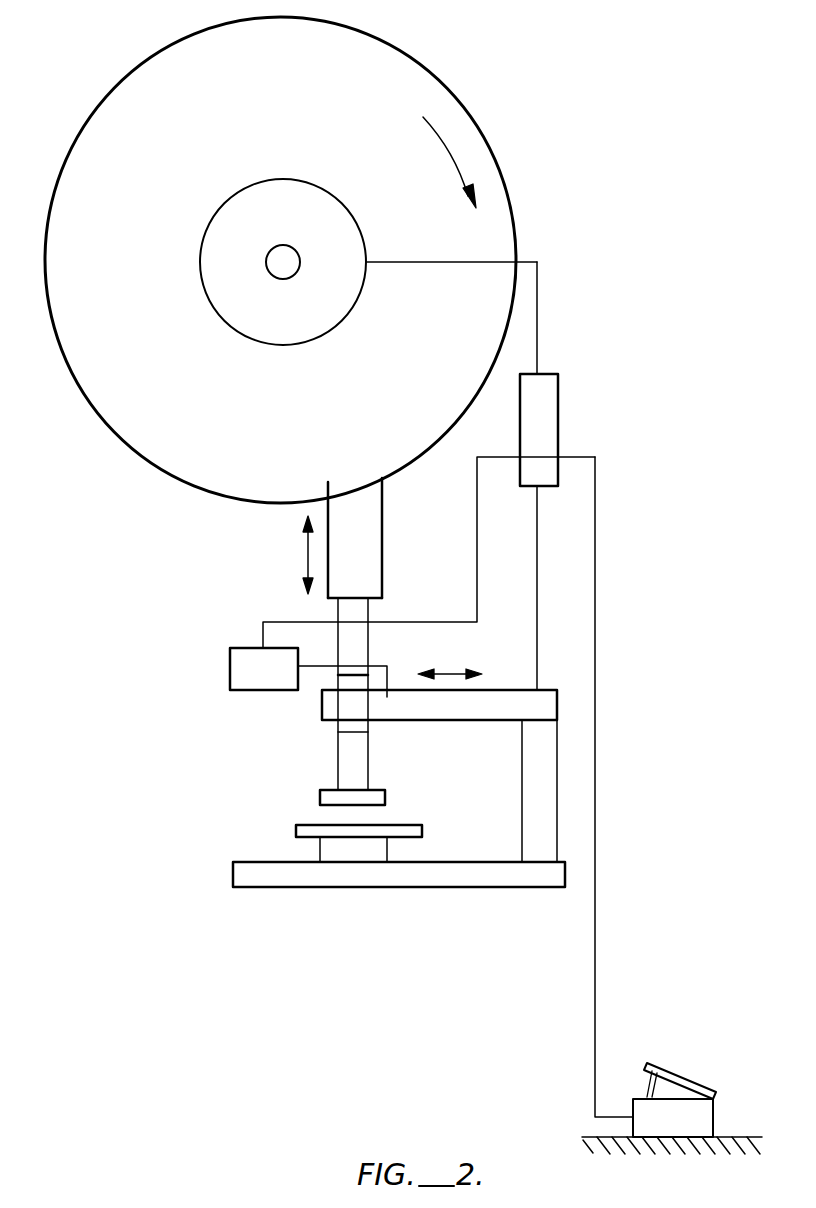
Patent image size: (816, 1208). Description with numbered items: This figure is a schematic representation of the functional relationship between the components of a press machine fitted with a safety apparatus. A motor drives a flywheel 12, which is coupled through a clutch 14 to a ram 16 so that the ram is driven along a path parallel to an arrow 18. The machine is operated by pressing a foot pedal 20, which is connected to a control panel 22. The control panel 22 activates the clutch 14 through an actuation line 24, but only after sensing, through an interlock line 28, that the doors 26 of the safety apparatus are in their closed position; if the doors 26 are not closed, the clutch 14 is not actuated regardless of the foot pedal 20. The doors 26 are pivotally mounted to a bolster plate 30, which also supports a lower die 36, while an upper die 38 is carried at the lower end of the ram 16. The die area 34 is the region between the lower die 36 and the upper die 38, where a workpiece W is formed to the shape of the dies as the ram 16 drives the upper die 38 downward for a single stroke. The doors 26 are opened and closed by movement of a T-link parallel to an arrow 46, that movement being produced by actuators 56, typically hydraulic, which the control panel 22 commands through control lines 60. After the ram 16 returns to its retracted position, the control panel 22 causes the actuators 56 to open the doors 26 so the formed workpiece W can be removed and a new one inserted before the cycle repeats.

The flywheel 12 is at (478, 120).
The clutch 14 is at (303, 346).
The ram 16 is at (367, 546).
The arrow 18 is at (307, 555).
The foot pedal 20 is at (698, 1116).
The control panel 22 is at (547, 400).
The actuation line 24 is at (539, 300).
The doors 26 is at (522, 770).
The interlock line 28 is at (539, 650).
The bolster plate 30 is at (456, 862).
The die area 34 is at (378, 813).
The lower die 36 is at (330, 850).
The upper die 38 is at (320, 798).
The arrow 46 is at (448, 674).
The actuators 56 is at (232, 672).
The control lines 60 is at (477, 570).
The workpiece W is at (410, 822).